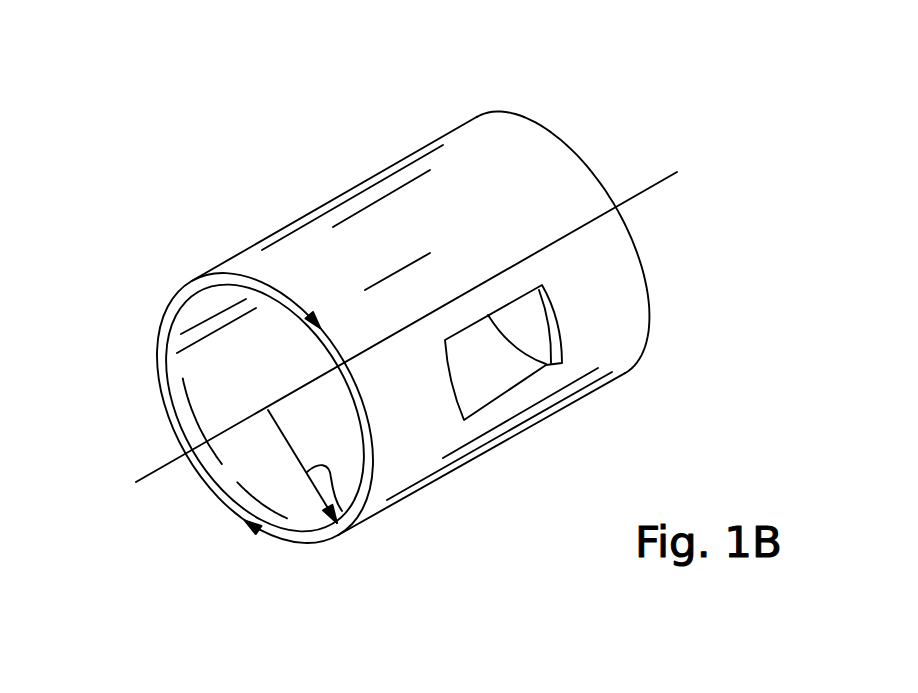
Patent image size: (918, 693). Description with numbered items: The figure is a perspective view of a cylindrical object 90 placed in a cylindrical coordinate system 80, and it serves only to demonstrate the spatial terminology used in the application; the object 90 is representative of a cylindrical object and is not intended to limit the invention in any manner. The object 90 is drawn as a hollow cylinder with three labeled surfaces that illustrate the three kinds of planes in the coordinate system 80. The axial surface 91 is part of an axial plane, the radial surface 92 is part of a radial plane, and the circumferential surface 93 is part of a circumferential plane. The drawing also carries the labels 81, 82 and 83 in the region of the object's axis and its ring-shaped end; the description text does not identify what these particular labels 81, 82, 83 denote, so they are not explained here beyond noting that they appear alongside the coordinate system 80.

The cylindrical coordinate system 80 is at (580, 133).
The object 90 is at (445, 120).
The circumferential surface 93 is at (380, 219).
The axial surface 91 is at (525, 375).
The radial surface 92 is at (285, 530).
The ring 82 is at (340, 508).
The front edge of ring 83 is at (164, 304).
The central axis 81 is at (148, 477).